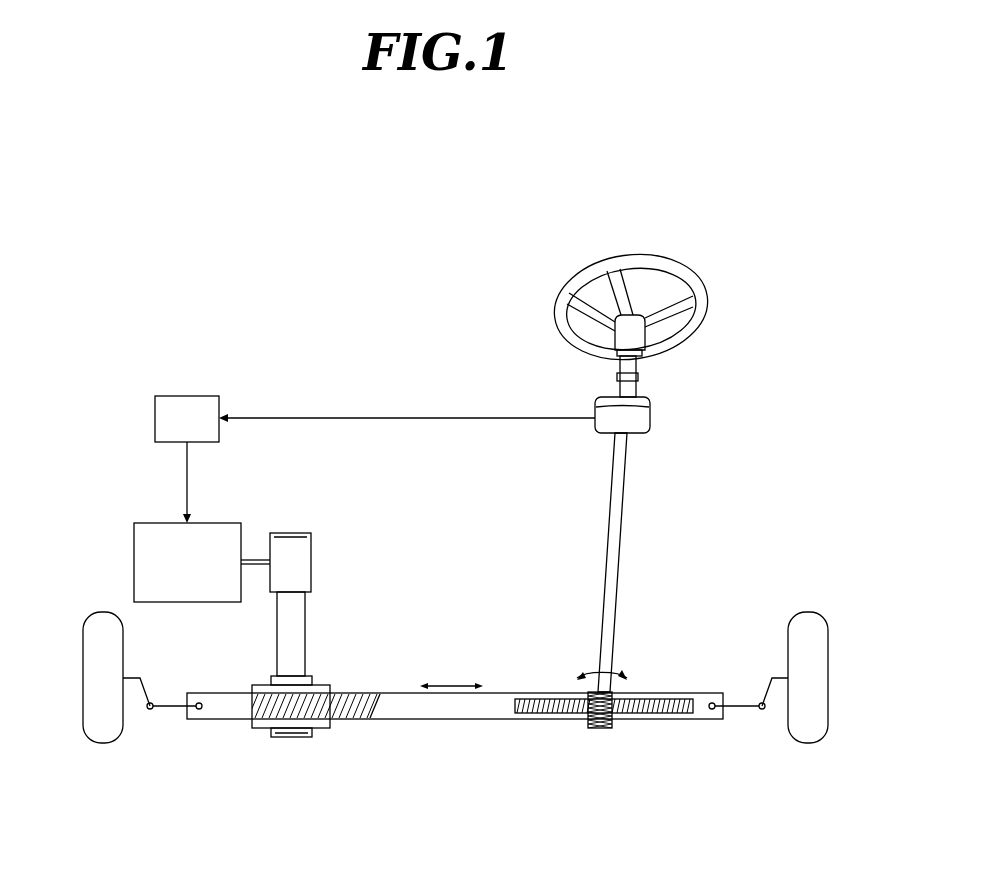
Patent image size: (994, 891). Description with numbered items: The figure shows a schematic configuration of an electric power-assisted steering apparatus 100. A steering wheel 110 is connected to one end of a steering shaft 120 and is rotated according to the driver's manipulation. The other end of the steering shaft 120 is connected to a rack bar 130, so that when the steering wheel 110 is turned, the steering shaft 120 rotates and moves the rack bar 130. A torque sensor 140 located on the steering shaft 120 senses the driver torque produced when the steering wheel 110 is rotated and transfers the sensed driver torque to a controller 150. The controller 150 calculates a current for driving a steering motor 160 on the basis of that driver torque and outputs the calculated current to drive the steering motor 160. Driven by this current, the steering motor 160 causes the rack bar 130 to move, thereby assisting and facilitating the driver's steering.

The electric power-assisted steering apparatus 100 is at (147, 182).
The steering wheel 110 is at (658, 272).
The steering shaft 120 is at (608, 523).
The rack bar 130 is at (523, 693).
The torque sensor 140 is at (652, 417).
The controller 150 is at (207, 396).
The steering motor 160 is at (134, 578).